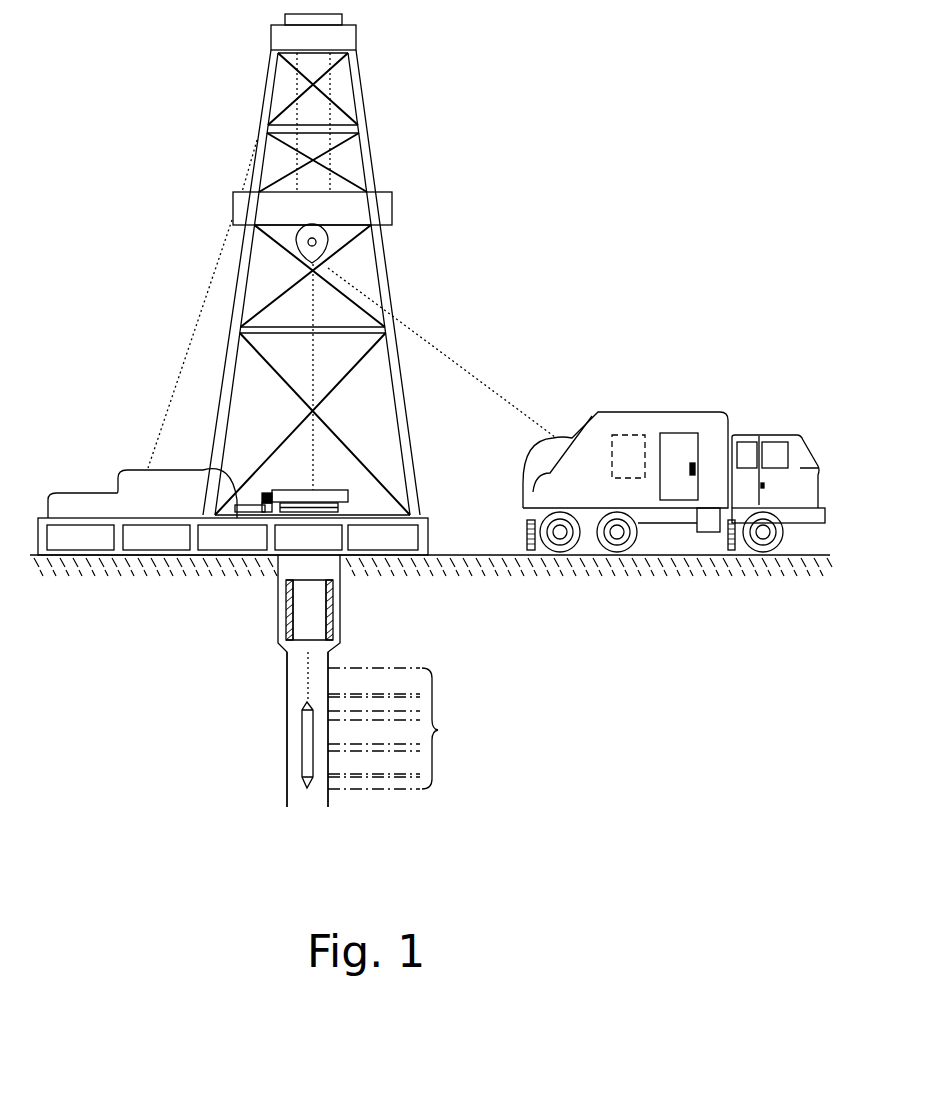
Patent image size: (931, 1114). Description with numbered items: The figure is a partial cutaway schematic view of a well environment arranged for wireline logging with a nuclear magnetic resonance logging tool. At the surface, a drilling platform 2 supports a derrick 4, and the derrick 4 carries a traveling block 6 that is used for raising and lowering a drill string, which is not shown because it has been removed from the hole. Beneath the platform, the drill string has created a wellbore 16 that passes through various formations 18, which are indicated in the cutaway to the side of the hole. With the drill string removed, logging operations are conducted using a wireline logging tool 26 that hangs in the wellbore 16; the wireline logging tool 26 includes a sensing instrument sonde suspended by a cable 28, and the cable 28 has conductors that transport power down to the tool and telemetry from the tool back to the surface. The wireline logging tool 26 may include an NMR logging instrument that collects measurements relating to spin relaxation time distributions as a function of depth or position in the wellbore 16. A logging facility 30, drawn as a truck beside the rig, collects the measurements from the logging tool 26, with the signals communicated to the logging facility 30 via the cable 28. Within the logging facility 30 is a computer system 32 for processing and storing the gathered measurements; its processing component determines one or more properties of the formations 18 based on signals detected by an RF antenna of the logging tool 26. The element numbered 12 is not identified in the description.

The drilling platform 2 is at (430, 537).
The derrick 4 is at (417, 481).
The traveling block 6 is at (322, 241).
The top drive / hook 12 is at (323, 490).
The wellbore 16 is at (288, 778).
The formations 18 is at (403, 728).
The wireline logging tool 26 is at (305, 745).
The cable 28 is at (425, 338).
The logging facility 30 is at (692, 412).
The computer system 32 is at (623, 433).